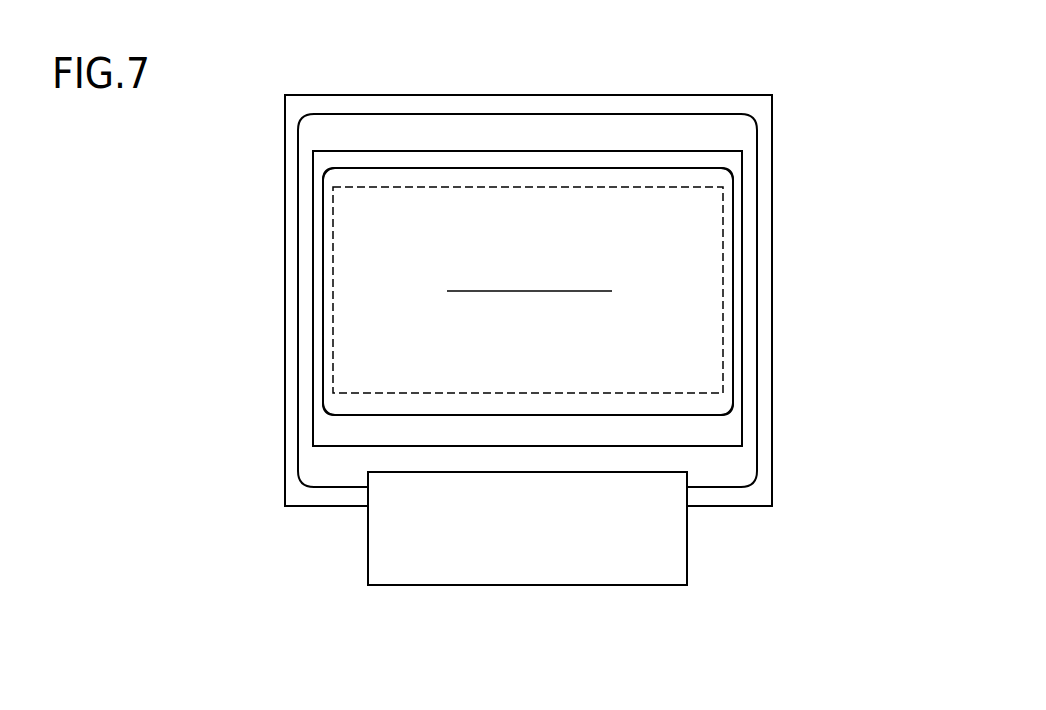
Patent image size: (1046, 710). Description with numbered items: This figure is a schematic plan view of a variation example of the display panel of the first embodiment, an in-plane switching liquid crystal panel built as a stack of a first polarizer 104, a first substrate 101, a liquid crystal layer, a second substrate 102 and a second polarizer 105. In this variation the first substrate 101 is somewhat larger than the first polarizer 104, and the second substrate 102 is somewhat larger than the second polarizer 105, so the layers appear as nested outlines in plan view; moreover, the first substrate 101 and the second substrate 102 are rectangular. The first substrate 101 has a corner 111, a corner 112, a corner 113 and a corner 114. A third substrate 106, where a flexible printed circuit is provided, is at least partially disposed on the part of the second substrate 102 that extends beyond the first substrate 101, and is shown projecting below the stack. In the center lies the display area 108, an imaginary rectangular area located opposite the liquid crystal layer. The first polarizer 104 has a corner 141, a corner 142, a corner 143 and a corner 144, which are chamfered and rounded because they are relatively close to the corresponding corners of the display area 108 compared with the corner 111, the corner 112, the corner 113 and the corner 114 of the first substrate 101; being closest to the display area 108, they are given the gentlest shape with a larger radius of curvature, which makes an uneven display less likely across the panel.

The first substrate 101 is at (667, 157).
The second substrate 102 is at (757, 110).
The first polarizer 104 is at (722, 405).
The second polarizer 105 is at (733, 136).
The third substrate 106 is at (540, 558).
The display area 108 is at (560, 215).
The corner 111 is at (742, 446).
The corner 112 is at (313, 446).
The corner 113 is at (313, 152).
The corner 114 is at (742, 151).
The corner 141 is at (728, 410).
The corner 142 is at (330, 407).
The corner 143 is at (327, 175).
The corner 144 is at (728, 172).